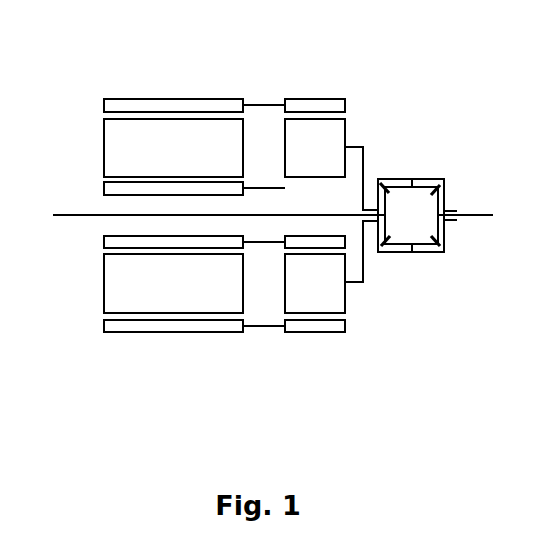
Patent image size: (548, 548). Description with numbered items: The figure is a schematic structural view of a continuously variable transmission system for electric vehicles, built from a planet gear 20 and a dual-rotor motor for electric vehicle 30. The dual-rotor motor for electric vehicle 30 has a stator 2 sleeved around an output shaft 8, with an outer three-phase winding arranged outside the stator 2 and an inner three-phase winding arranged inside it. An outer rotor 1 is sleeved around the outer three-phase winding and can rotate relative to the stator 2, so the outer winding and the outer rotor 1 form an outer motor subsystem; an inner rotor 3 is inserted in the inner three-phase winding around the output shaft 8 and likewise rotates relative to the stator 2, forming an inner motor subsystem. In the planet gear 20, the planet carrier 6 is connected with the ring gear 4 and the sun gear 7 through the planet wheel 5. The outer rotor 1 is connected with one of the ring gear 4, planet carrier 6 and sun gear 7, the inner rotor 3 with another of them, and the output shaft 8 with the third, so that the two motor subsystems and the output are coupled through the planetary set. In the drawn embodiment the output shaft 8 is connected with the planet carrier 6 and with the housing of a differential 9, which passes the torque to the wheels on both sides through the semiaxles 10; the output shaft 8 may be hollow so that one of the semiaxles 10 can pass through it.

The outer rotor 1 is at (123, 108).
The stator 2 is at (161, 143).
The inner rotor 3 is at (197, 188).
The ring gear 4 is at (312, 108).
The planet wheel 5 is at (314, 145).
The planet carrier 6 is at (365, 168).
The sun gear 7 is at (298, 242).
The output shaft 8 is at (370, 220).
The differential 9 is at (420, 232).
The semiaxles 10 is at (93, 215).
The planet gear 20 is at (335, 303).
The dual-rotor motor for electric vehicle 30 is at (205, 303).